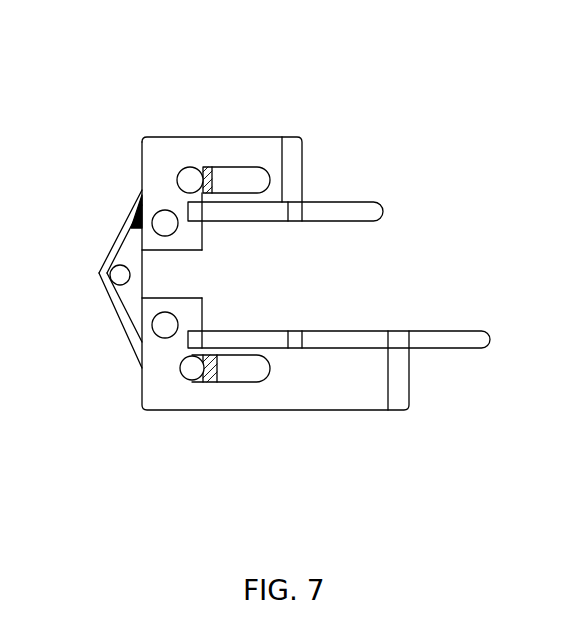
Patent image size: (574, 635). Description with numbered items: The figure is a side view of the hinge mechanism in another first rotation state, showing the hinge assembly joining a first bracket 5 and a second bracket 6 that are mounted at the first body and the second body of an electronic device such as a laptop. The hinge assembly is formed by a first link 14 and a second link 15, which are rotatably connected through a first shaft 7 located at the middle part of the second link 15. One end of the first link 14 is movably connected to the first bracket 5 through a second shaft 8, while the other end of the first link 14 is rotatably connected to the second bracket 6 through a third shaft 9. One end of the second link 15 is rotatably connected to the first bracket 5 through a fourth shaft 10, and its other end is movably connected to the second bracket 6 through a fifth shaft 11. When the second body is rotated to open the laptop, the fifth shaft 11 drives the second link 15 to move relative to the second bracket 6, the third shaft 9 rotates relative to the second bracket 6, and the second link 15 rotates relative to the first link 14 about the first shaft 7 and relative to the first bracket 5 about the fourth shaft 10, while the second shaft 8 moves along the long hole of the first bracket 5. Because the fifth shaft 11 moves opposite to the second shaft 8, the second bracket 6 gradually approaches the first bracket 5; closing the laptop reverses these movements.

The first bracket 5 is at (337, 400).
The second bracket 6 is at (290, 153).
The first shaft 7 is at (120, 275).
The second shaft 8 is at (190, 180).
The third shaft 9 is at (165, 325).
The fourth shaft 10 is at (165, 223).
The fifth shaft 11 is at (192, 368).
The first link 14 is at (132, 213).
The second link 15 is at (122, 305).